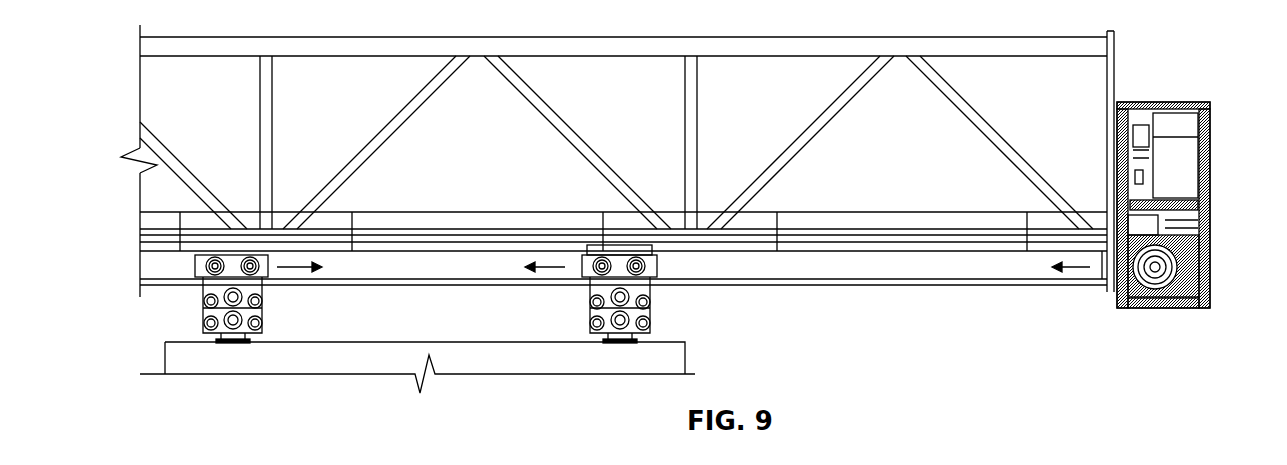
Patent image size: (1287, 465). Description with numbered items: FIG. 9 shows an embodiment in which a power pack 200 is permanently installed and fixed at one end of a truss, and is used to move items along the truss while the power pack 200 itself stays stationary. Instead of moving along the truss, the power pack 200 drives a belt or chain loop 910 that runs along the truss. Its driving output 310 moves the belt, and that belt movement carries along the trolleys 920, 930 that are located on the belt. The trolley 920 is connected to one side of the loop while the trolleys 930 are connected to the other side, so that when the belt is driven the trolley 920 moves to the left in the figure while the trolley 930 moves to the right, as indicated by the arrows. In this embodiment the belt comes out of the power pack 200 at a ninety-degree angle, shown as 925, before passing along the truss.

The belt or chain loop 910 is at (822, 247).
The trolley 920 is at (592, 243).
The trolleys 930 is at (252, 272).
The ninety-degree angle 925 is at (1101, 286).
The power pack 200 is at (1193, 209).
The driving output 310 is at (1200, 287).